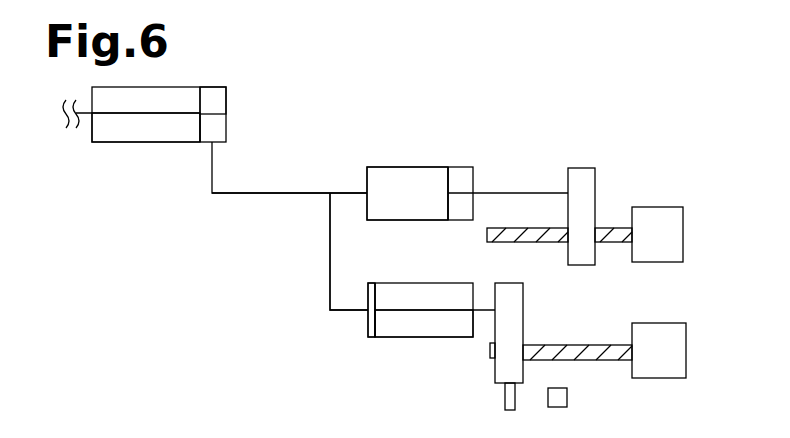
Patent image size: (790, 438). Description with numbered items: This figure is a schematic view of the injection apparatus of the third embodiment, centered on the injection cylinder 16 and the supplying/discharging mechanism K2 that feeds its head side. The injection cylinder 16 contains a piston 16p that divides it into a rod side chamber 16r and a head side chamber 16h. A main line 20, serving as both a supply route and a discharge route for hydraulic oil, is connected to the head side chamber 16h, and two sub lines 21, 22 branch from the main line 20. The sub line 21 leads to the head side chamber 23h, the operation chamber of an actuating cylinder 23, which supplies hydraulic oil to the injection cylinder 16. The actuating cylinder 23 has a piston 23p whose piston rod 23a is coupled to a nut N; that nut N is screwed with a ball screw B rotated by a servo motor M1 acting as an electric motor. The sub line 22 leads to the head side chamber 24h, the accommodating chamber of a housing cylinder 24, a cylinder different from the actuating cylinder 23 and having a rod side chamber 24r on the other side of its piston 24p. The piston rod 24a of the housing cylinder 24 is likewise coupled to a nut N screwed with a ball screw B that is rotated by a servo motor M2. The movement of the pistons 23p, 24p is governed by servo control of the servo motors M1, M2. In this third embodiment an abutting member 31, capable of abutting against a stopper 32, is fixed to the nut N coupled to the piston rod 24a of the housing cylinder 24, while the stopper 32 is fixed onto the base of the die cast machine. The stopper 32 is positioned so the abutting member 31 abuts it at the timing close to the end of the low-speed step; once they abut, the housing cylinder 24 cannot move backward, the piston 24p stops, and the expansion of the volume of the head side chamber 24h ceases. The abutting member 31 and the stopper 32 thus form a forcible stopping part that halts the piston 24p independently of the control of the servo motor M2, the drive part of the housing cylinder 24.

The injection cylinder 16 is at (152, 142).
The head side chamber 16h is at (213, 105).
The piston 16p is at (200, 124).
The rod side chamber 16r is at (128, 142).
The main line 20 is at (267, 196).
The sub line 21 is at (340, 192).
The sub line 22 is at (330, 280).
The actuating cylinder 23 is at (421, 167).
The head side chamber 23h is at (386, 178).
The piston 23p is at (452, 178).
The piston rod 23a is at (522, 192).
The housing cylinder 24 is at (423, 283).
The piston 24p is at (380, 296).
The piston rod 24a is at (465, 305).
The head side chamber 24h is at (368, 320).
The rod side chamber 24r is at (398, 336).
The abutting member 31 is at (510, 395).
The stopper 32 is at (567, 396).
The supplying/discharging mechanism K2 is at (511, 130).
The nut N is at (583, 168).
The ball screw B is at (512, 228).
The servo motor M1 is at (650, 207).
The servo motor M2 is at (658, 323).